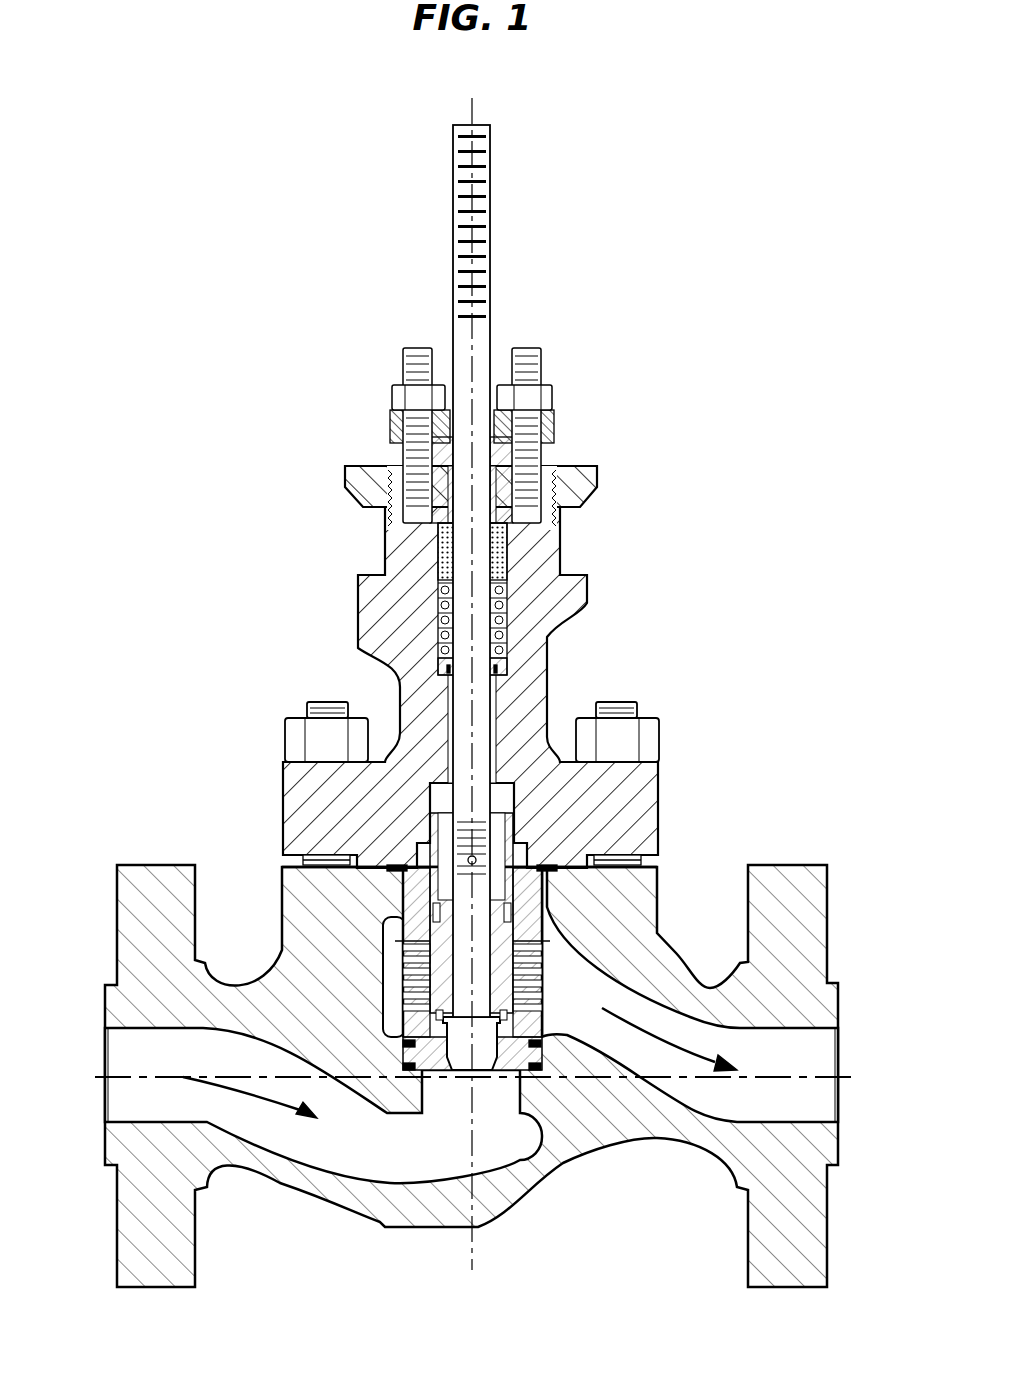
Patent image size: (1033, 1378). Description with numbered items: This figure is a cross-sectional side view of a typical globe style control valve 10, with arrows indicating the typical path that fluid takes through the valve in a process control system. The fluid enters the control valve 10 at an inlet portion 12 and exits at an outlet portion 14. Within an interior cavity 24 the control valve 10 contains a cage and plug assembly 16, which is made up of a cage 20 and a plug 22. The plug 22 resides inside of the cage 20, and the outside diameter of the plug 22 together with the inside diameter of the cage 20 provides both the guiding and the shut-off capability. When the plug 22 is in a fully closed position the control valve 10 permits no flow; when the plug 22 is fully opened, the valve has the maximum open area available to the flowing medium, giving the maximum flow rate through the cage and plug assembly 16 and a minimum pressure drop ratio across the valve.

The control valve 10 is at (740, 784).
The inlet portion 12 is at (105, 1042).
The outlet portion 14 is at (840, 997).
The cage and plug assembly 16 is at (408, 832).
The cage 20 is at (398, 886).
The plug 22 is at (400, 977).
The interior cavity 24 is at (650, 1013).